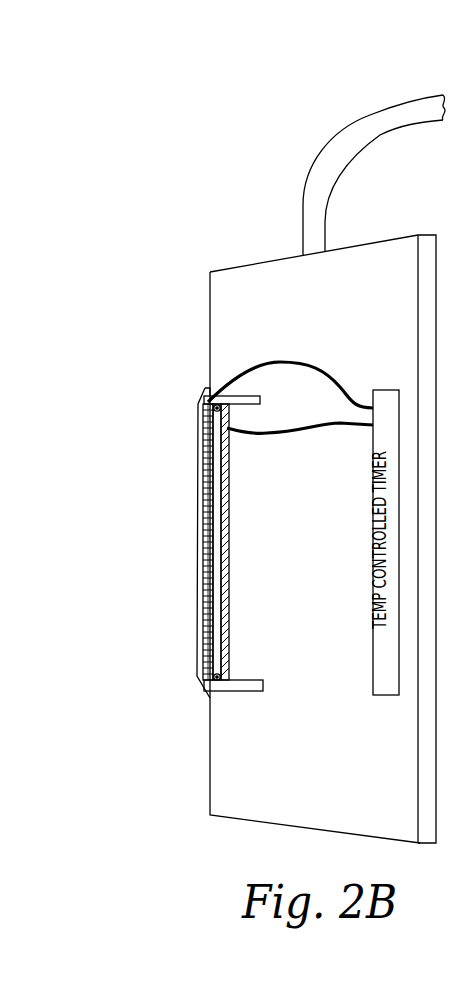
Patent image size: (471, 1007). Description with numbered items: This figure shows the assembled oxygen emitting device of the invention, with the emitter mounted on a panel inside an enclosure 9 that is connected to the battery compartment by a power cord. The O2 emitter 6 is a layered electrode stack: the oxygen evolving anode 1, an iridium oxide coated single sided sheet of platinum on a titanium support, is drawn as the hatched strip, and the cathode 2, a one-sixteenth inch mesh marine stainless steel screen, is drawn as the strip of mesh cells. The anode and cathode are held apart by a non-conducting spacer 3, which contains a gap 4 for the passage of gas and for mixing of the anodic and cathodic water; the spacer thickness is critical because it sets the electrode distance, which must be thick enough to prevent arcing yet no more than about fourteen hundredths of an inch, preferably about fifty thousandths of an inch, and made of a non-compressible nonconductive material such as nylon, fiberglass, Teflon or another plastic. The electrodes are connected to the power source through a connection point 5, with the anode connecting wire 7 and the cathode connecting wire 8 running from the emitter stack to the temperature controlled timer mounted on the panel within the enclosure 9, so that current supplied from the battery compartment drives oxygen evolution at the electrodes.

The oxygen evolving anode 1 is at (229, 592).
The cathode 2 is at (203, 490).
The non-conducting spacer 3 is at (224, 678).
The gap 4 is at (220, 555).
The connection point 5 is at (327, 155).
The O2 emitter 6 is at (197, 577).
The anode connecting wire 7 is at (298, 433).
The cathode connecting wire 8 is at (291, 362).
The enclosure 9 is at (138, 218).